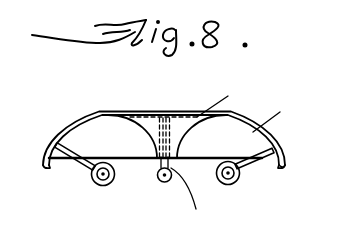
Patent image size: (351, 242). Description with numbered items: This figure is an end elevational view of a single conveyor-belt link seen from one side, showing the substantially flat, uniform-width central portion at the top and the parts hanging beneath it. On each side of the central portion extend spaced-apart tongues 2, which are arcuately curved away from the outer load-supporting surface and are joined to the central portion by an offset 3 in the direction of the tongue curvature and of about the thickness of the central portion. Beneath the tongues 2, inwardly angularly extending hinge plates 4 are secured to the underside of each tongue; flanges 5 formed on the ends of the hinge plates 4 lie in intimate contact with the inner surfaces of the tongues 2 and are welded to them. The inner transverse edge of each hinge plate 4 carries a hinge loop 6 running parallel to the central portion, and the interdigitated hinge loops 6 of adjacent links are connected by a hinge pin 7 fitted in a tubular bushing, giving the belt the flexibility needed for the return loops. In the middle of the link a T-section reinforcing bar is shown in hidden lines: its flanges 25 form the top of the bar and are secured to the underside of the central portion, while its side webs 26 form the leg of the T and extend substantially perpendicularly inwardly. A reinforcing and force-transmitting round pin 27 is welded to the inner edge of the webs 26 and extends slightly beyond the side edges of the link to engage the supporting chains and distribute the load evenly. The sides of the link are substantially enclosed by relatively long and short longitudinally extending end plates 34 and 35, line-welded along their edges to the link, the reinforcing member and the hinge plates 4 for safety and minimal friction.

The tongues 2 is at (63, 128).
The offset 3 is at (99, 111).
The hinge plates 4 is at (243, 168).
The flanges 5 is at (271, 158).
The hinge loop 6 is at (100, 184).
The hinge pin 7 is at (113, 111).
The flanges 25 is at (180, 111).
The side webs 26 is at (194, 197).
The reinforcing and force-transmitting round bar or pin 27 is at (160, 182).
The long end plate 34 is at (281, 113).
The short end plate 35 is at (223, 97).